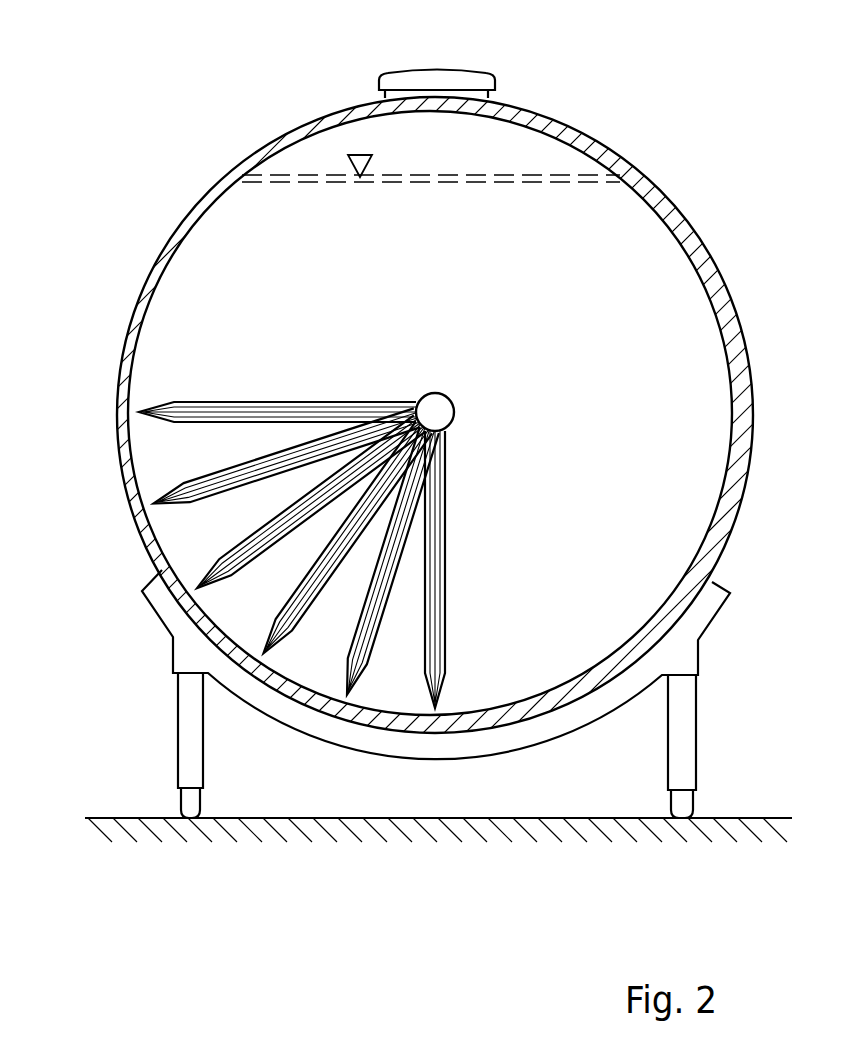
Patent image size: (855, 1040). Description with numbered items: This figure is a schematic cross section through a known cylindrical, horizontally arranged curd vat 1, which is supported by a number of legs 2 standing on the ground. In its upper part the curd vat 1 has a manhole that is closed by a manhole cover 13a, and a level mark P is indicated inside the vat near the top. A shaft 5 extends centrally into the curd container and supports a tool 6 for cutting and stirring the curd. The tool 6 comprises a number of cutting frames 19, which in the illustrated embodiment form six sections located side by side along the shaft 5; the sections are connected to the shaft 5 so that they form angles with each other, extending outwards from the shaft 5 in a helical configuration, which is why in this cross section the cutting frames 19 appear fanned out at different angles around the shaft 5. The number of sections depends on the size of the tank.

The curd vat 1 is at (728, 322).
The manhole cover 13a is at (438, 80).
The liquid level P is at (373, 158).
The legs 2 is at (192, 735).
The cutting frames 19 is at (240, 402).
The shaft 5 is at (435, 412).
The tool 6 is at (463, 497).